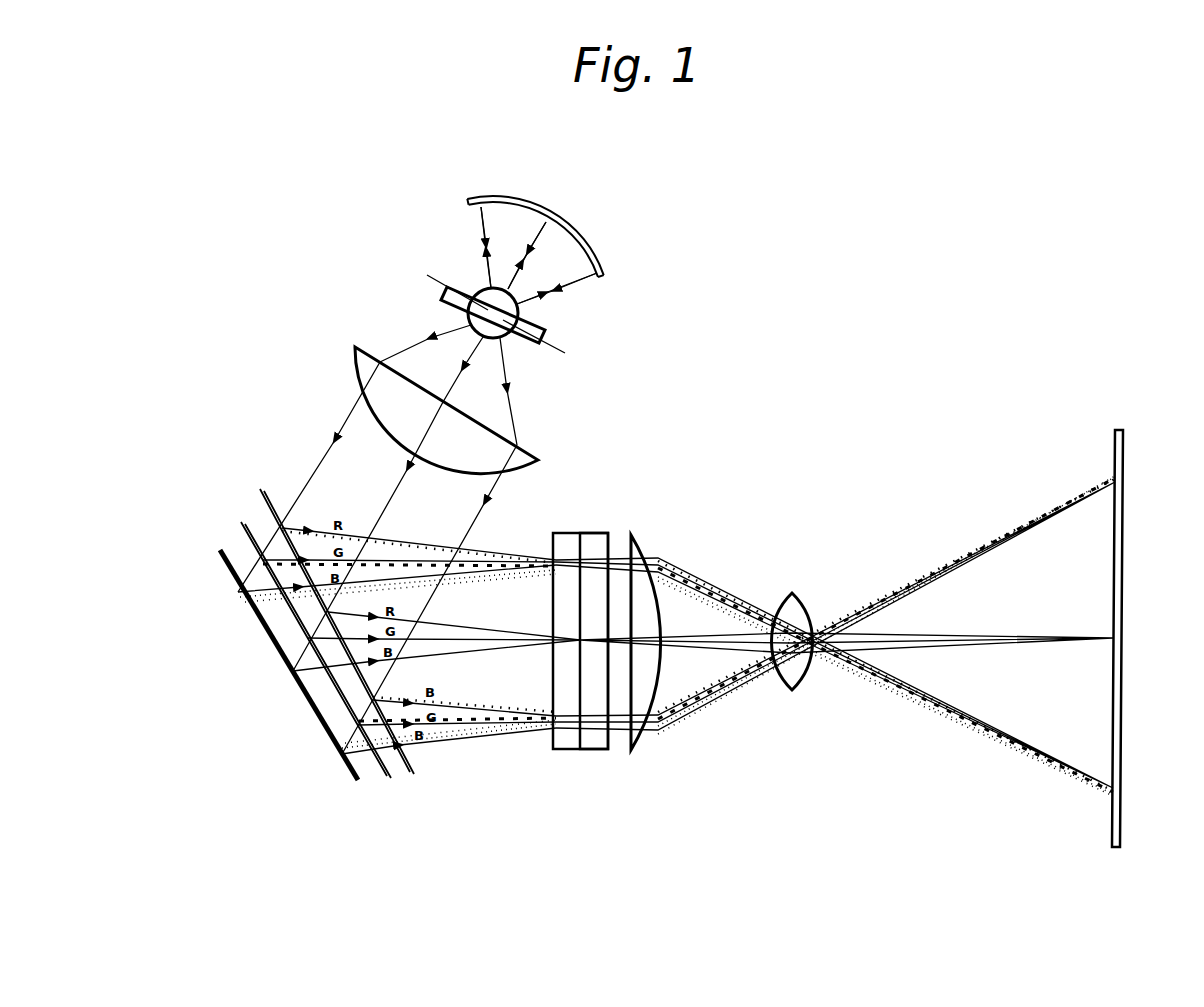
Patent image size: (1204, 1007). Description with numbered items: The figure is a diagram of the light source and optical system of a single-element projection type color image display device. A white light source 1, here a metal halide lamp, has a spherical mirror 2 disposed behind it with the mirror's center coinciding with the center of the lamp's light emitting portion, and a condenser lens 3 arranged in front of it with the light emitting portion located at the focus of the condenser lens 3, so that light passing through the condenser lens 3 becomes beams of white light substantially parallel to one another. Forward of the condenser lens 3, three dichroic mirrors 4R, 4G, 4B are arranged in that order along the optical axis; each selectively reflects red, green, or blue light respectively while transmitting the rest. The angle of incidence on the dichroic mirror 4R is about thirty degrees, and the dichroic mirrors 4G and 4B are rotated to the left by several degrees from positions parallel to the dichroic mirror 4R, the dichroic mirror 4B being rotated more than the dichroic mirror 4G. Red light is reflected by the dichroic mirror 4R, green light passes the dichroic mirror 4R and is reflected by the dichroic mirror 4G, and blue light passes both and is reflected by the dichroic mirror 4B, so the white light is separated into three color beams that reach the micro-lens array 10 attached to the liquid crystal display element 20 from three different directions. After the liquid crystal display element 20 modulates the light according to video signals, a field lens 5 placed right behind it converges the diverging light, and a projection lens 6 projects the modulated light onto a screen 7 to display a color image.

The white light source 1 is at (462, 290).
The spherical mirror 2 is at (503, 200).
The condenser lens 3 is at (357, 372).
The red dichroic mirror 4R is at (262, 490).
The green dichroic mirror 4G is at (243, 523).
The blue dichroic mirror 4B is at (220, 550).
The field lens 5 is at (637, 737).
The projection lens 6 is at (797, 690).
The screen 7 is at (1123, 720).
The micro-lens array 10 is at (560, 749).
The liquid crystal display element 20 is at (587, 749).